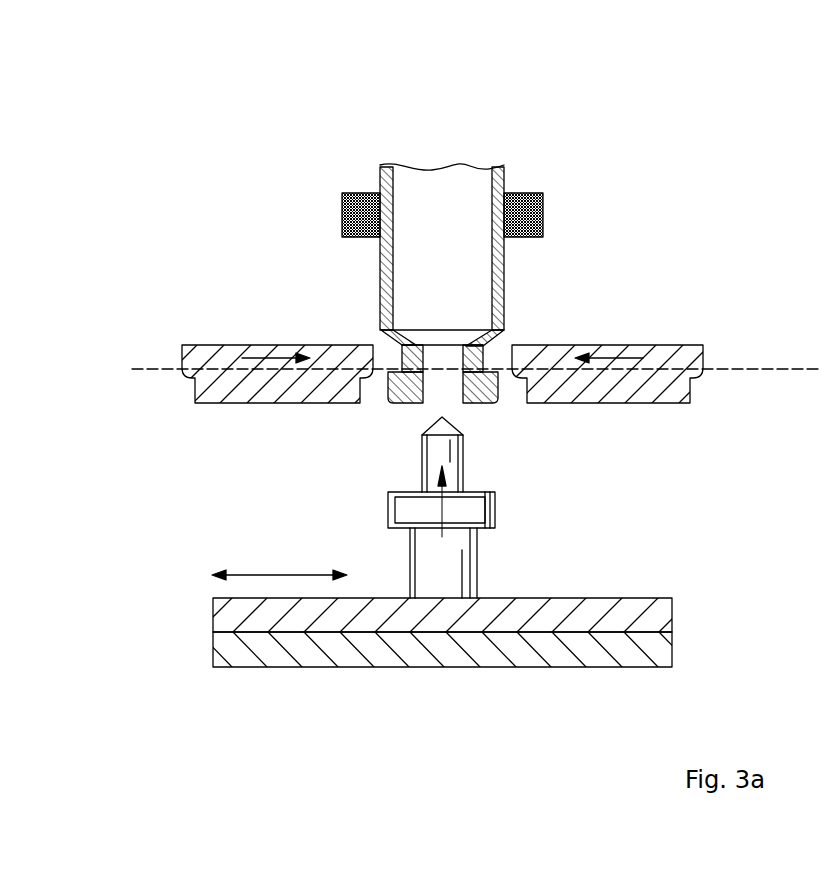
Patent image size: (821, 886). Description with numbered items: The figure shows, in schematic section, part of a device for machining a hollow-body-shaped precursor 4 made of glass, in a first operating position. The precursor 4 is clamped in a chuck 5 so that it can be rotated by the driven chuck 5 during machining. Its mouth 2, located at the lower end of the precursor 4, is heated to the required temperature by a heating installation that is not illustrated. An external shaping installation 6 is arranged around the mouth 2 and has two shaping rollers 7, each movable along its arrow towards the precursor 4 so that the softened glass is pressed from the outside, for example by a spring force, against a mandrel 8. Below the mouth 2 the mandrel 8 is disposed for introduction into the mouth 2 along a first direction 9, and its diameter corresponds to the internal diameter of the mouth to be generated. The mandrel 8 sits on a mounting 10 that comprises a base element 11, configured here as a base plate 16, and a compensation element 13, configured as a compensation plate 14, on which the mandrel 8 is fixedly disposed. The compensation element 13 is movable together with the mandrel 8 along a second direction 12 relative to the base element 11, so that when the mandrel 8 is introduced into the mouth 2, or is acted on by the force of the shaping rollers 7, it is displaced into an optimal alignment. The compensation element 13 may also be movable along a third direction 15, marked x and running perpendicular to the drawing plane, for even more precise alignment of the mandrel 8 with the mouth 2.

The mouth 2 is at (484, 358).
The hollow-body-shaped precursor 4 is at (447, 165).
The chuck 5 is at (543, 208).
The external shaping installation 6 is at (480, 321).
The shaping rollers 7 is at (231, 345).
The mandrel 8 is at (464, 447).
The first direction 9 is at (440, 498).
The mounting 10 is at (471, 632).
The base element 11 is at (506, 667).
The second direction 12 is at (279, 560).
The compensation element 13 is at (503, 600).
The compensation plate 14 is at (672, 612).
The third direction 15 is at (212, 519).
The base plate 16 is at (672, 648).